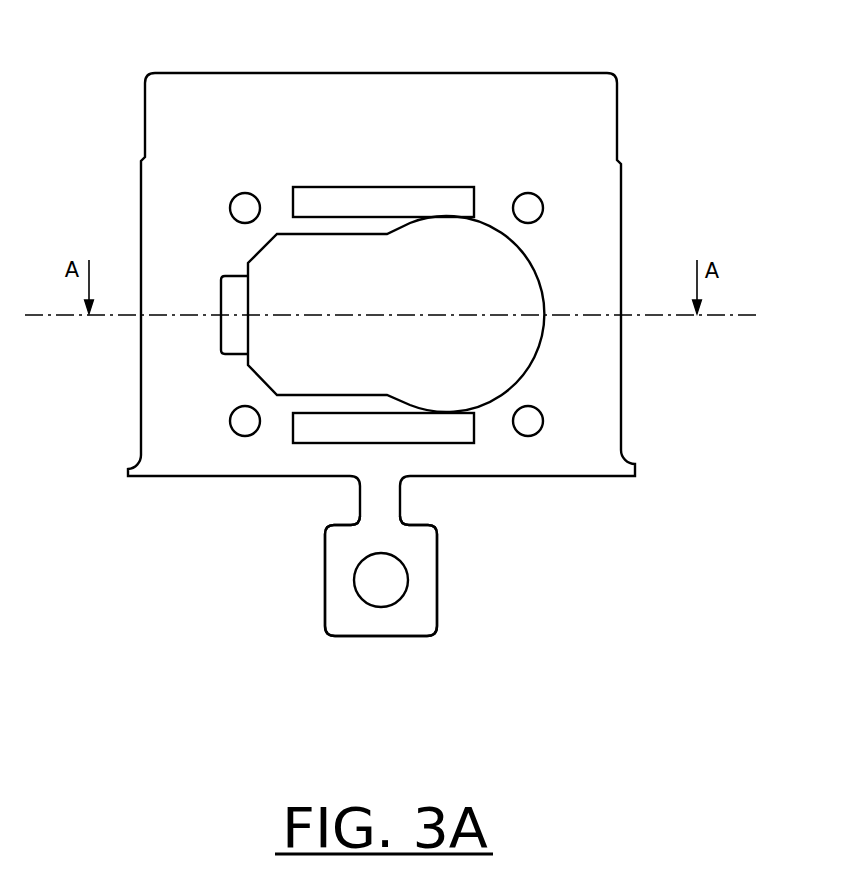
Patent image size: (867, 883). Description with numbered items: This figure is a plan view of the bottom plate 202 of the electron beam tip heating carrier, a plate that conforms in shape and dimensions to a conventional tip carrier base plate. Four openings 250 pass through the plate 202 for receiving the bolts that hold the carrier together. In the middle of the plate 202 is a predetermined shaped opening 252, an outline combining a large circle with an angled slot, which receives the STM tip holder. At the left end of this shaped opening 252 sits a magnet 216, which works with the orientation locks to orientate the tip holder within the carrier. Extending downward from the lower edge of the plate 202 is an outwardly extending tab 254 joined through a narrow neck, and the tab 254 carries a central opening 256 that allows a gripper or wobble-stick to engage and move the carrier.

The bottom plate 202 is at (307, 40).
The magnet 216 is at (207, 327).
The openings 250 is at (269, 193).
The predetermined shaped opening 252 is at (553, 274).
The outwardly extending tab 254 is at (427, 615).
The central opening 256 is at (349, 606).